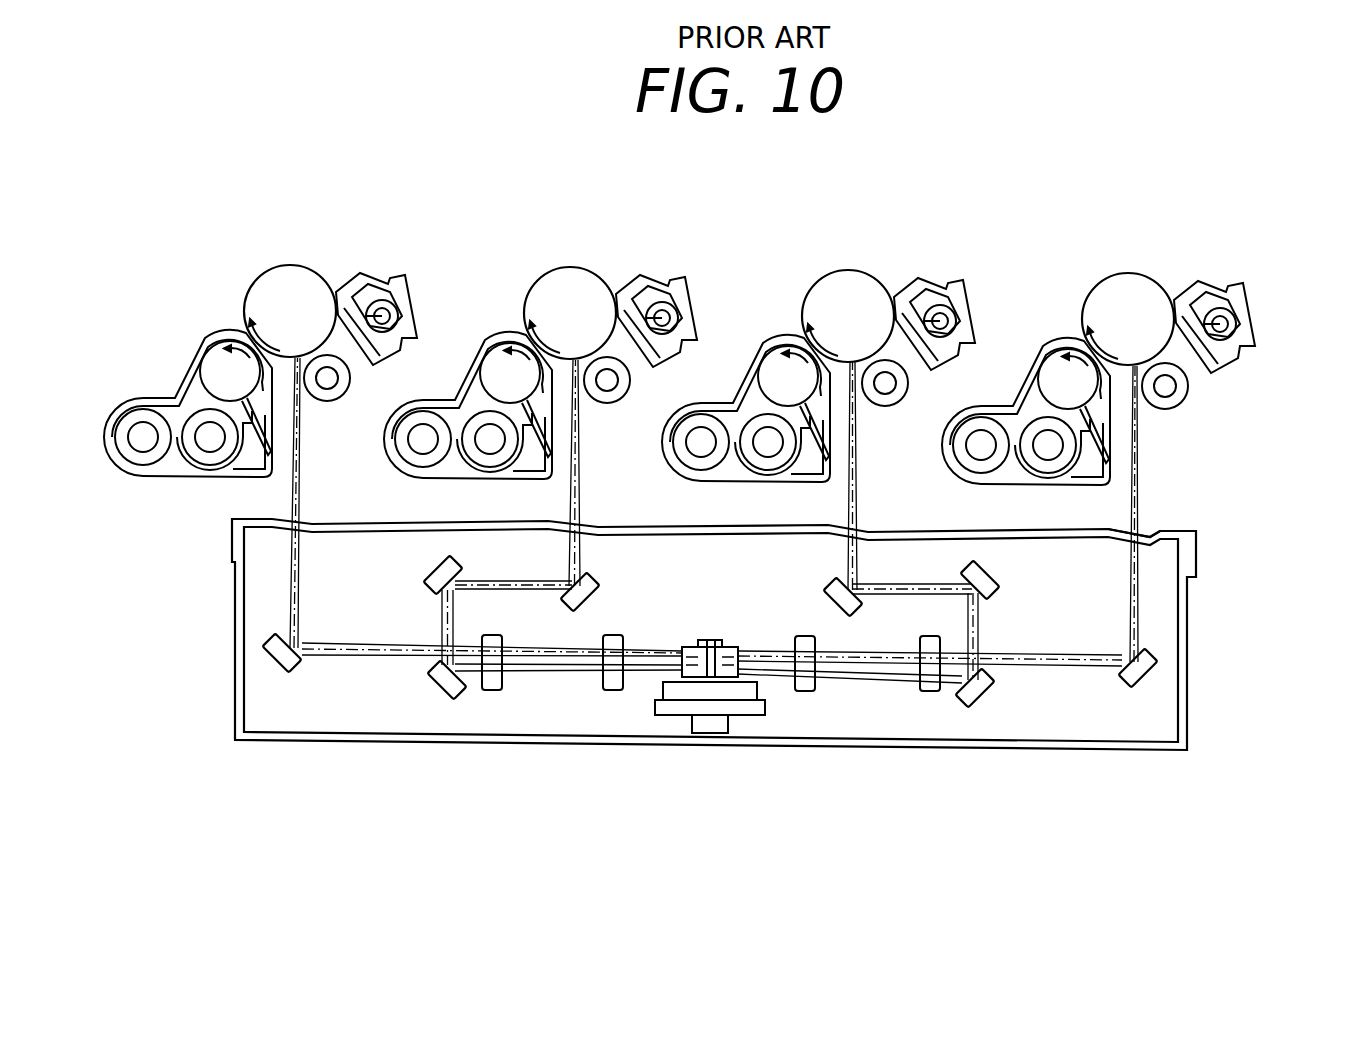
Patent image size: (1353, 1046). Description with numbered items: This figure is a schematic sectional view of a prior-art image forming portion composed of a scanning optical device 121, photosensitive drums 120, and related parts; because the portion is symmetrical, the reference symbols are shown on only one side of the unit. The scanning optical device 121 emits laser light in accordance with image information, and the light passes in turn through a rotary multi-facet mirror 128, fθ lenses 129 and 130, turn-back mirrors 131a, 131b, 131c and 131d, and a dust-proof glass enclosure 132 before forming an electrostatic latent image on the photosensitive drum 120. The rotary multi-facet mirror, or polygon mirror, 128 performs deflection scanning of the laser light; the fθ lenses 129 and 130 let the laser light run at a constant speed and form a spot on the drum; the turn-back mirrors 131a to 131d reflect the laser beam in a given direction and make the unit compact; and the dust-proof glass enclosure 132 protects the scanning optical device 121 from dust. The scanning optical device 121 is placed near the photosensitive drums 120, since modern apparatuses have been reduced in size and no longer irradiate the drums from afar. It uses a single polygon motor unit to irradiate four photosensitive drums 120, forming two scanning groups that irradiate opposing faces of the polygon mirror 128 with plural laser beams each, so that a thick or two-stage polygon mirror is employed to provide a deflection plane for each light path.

The photosensitive drum 120 is at (850, 269).
The scanning optical device 121 is at (1193, 617).
The rotary multi-facet mirror 128 is at (748, 673).
The fθ lens 129 is at (801, 636).
The fθ lens 130 is at (930, 692).
The turn-back mirror 131a is at (1142, 680).
The turn-back mirror 131b is at (980, 697).
The turn-back mirror 131c is at (994, 573).
The turn-back mirror 131d is at (855, 582).
The dust-proof glass enclosure 132 is at (1150, 535).